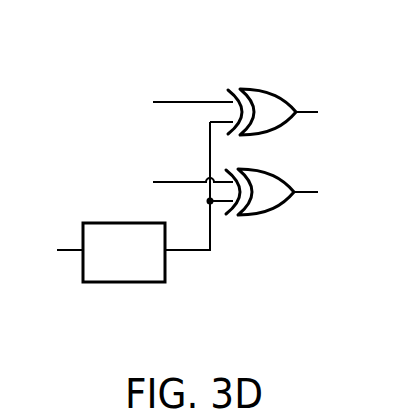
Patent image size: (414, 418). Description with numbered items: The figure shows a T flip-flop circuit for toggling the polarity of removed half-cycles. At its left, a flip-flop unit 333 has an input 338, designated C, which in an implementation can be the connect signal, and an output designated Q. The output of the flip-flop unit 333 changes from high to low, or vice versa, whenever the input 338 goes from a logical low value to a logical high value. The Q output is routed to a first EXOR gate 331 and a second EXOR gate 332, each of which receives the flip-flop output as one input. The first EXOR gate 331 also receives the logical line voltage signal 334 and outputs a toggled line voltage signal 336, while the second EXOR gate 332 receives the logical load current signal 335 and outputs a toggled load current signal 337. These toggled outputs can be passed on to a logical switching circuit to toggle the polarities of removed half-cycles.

The first EXOR gate 331 is at (273, 90).
The second EXOR gate 332 is at (273, 213).
The flip-flop unit 333 is at (115, 282).
The logical line voltage signal 334 is at (197, 102).
The logical load current signal 335 is at (180, 182).
The toggled line voltage signal 336 is at (307, 111).
The toggled load current signal 337 is at (305, 192).
The input 338 is at (67, 250).